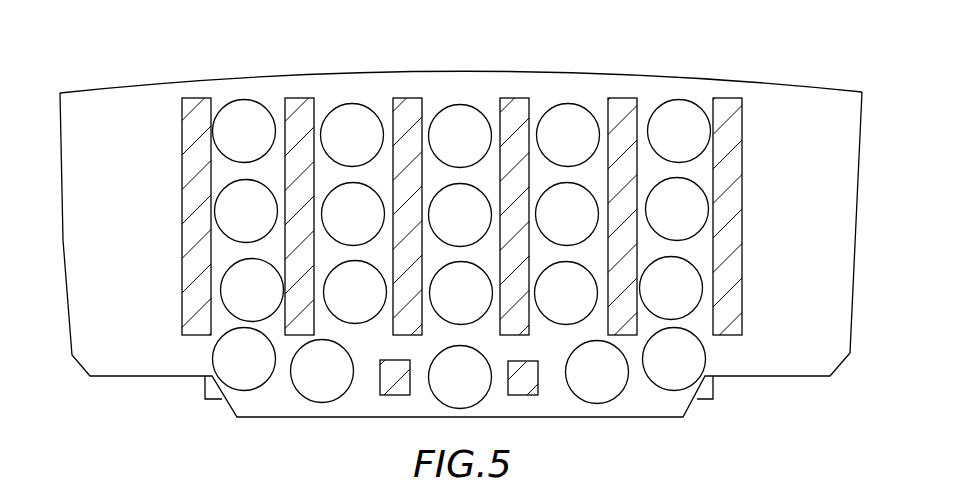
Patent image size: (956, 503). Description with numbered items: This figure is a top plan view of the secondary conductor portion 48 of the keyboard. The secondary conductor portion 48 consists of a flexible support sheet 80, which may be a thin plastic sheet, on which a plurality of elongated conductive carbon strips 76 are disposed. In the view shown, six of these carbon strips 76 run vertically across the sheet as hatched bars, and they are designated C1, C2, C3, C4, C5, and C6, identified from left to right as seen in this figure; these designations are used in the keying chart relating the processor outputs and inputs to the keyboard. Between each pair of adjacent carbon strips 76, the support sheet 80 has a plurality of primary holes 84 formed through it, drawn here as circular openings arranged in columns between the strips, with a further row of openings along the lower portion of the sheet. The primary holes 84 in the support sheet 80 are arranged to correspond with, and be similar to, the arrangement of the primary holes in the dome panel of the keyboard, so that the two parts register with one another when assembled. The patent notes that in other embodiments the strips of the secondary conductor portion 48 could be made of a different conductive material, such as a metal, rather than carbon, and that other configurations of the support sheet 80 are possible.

The secondary conductor portion 48 is at (461, 212).
The flexible support sheet 80 is at (272, 76).
The elongated conductive carbon strip 76 is at (487, 181).
The primary hole 84 is at (553, 106).
The first carbon strip C1 is at (197, 98).
The second carbon strip C2 is at (298, 98).
The third carbon strip C3 is at (398, 98).
The fourth carbon strip C4 is at (506, 98).
The fifth carbon strip C5 is at (632, 98).
The sixth carbon strip C6 is at (732, 98).